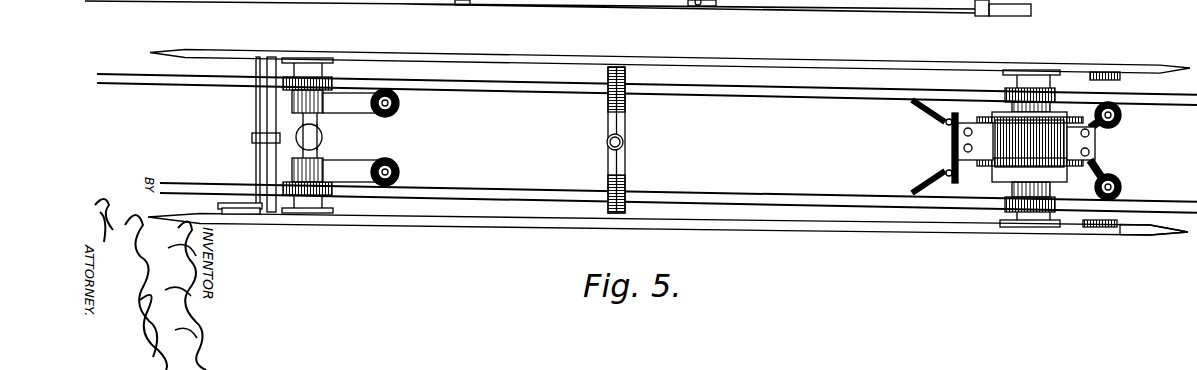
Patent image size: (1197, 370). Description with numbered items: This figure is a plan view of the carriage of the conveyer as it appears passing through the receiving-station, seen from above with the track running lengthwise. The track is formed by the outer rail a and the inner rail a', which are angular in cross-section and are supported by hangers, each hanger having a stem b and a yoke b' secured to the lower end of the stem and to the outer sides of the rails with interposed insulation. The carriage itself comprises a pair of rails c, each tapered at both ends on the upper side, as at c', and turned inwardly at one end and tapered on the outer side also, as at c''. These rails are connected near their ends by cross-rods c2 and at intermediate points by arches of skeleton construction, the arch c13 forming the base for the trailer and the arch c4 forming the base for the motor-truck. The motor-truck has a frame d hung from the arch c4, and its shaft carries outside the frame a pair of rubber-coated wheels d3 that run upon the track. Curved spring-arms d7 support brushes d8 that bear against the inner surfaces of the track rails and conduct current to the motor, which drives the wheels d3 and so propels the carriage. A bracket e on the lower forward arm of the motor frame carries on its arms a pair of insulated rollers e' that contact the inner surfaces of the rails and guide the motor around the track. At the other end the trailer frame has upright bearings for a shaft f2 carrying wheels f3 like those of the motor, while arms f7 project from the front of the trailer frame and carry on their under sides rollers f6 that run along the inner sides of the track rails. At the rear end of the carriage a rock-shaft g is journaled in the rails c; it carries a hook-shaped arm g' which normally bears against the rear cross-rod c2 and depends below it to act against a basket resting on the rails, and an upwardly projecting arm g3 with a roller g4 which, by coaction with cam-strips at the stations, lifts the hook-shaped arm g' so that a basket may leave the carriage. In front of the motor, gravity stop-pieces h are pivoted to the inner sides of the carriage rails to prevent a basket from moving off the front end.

The outer rail a is at (678, 186).
The inner rail a' is at (647, 93).
The hanger stem b is at (627, 140).
The yoke b' is at (630, 187).
The carriage rails c is at (670, 54).
The tapered upper end of rail c' is at (669, 149).
The tapered outer side of rail c'' is at (1154, 247).
The cross-rod c2 is at (276, 107).
The arch c4 is at (1033, 72).
The arch c13 is at (313, 58).
The motor frame d is at (1010, 147).
The wheels d3 is at (1003, 204).
The curved spring-arms d7 is at (947, 135).
The brushes d8 is at (913, 110).
The bracket e is at (1094, 163).
The rollers e' is at (1118, 116).
The shaft f2 is at (314, 152).
The wheels f3 is at (281, 77).
The rollers f6 is at (396, 115).
The arms f7 is at (353, 98).
The shaft g is at (244, 134).
The hook-shaped arm g' is at (250, 142).
The arm g3 is at (253, 213).
The roller g4 is at (231, 214).
The gravity stop-pieces h is at (1105, 70).